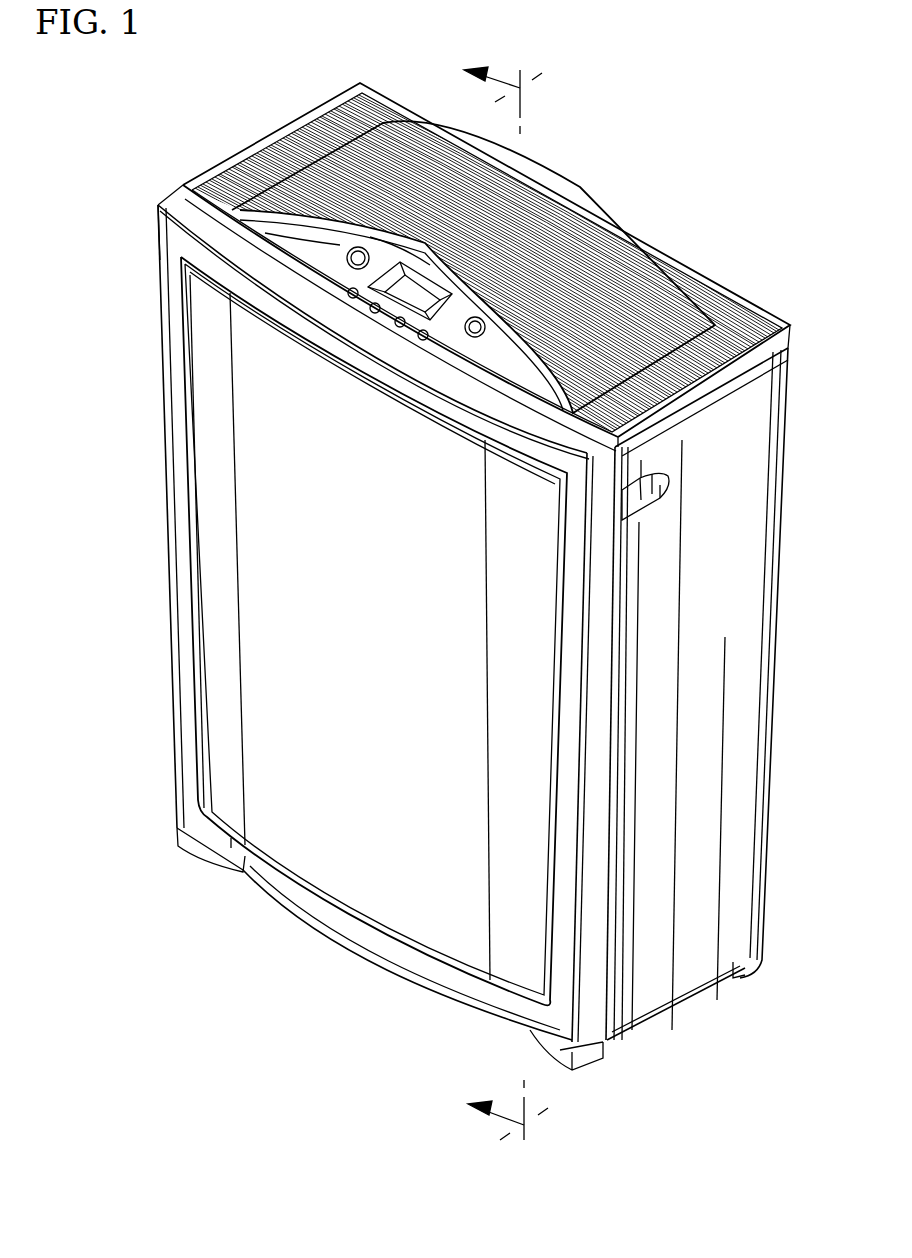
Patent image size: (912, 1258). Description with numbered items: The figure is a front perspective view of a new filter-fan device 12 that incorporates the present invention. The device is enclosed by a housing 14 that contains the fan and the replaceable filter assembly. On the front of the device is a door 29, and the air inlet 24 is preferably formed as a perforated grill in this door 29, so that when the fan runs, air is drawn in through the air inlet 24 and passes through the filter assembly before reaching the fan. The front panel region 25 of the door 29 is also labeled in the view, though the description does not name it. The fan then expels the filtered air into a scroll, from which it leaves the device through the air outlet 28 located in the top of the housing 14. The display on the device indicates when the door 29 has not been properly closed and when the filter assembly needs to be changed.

The filter-fan device 12 is at (690, 1043).
The housing 14 is at (200, 175).
The air inlet 24 is at (268, 702).
The front panel edge 25 is at (262, 590).
The air outlet 28 is at (603, 235).
The door 29 is at (158, 205).